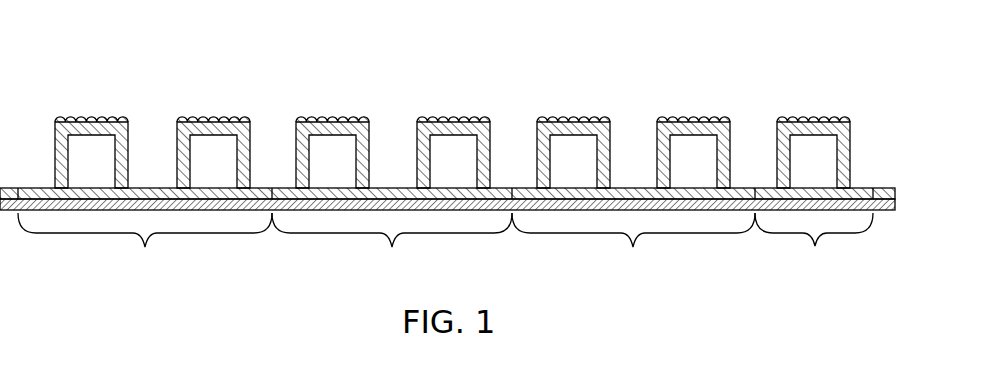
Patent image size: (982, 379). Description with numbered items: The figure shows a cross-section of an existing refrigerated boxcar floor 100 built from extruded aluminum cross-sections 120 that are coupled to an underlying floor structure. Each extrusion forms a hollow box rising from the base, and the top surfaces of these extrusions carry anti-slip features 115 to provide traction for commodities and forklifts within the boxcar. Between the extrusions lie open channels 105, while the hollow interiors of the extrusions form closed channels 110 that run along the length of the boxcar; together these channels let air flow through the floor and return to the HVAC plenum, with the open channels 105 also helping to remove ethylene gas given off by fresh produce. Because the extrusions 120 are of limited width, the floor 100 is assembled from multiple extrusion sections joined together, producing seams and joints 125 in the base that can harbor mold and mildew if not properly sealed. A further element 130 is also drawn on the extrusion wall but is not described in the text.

The semiconductor structure 100 is at (661, 54).
The gap between fin structures 105 is at (145, 138).
The fin core 110 is at (337, 150).
The capping layer 115 is at (838, 118).
The fin pitch 120 is at (445, 246).
The substrate 125 is at (272, 188).
The sidewall liner 130 is at (480, 142).